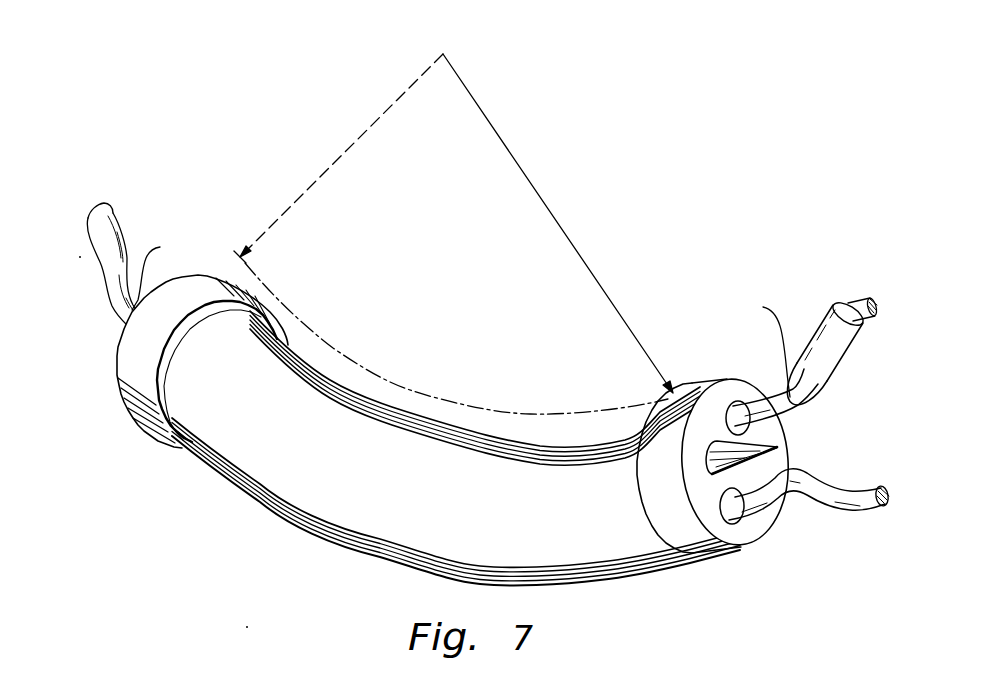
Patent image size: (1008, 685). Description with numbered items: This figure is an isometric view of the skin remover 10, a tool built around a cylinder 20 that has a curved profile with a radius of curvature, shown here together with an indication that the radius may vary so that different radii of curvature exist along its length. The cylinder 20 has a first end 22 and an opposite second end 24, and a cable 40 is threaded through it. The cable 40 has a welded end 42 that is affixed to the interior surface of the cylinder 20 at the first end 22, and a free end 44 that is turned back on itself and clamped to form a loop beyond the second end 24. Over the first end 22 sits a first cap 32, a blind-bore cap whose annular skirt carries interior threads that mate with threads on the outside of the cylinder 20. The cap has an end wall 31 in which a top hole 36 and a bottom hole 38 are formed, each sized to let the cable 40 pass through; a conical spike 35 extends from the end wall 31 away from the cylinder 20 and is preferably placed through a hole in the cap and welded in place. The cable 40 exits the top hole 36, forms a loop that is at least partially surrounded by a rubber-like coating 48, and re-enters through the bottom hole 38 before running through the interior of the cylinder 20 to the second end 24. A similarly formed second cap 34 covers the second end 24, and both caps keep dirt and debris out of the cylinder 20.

The skin remover 10 is at (478, 341).
The cylinder 20 is at (367, 550).
The first end 22 is at (663, 543).
The second end 24 is at (175, 436).
The end wall 31 is at (750, 537).
The first cap 32 is at (714, 543).
The second cap 34 is at (141, 418).
The conical spike 35 is at (780, 432).
The top hole 36 is at (743, 518).
The bottom hole 38 is at (737, 403).
The cable 40 is at (113, 224).
The welded end 42 is at (830, 493).
The free end 44 is at (461, 315).
The coating 48 is at (828, 365).